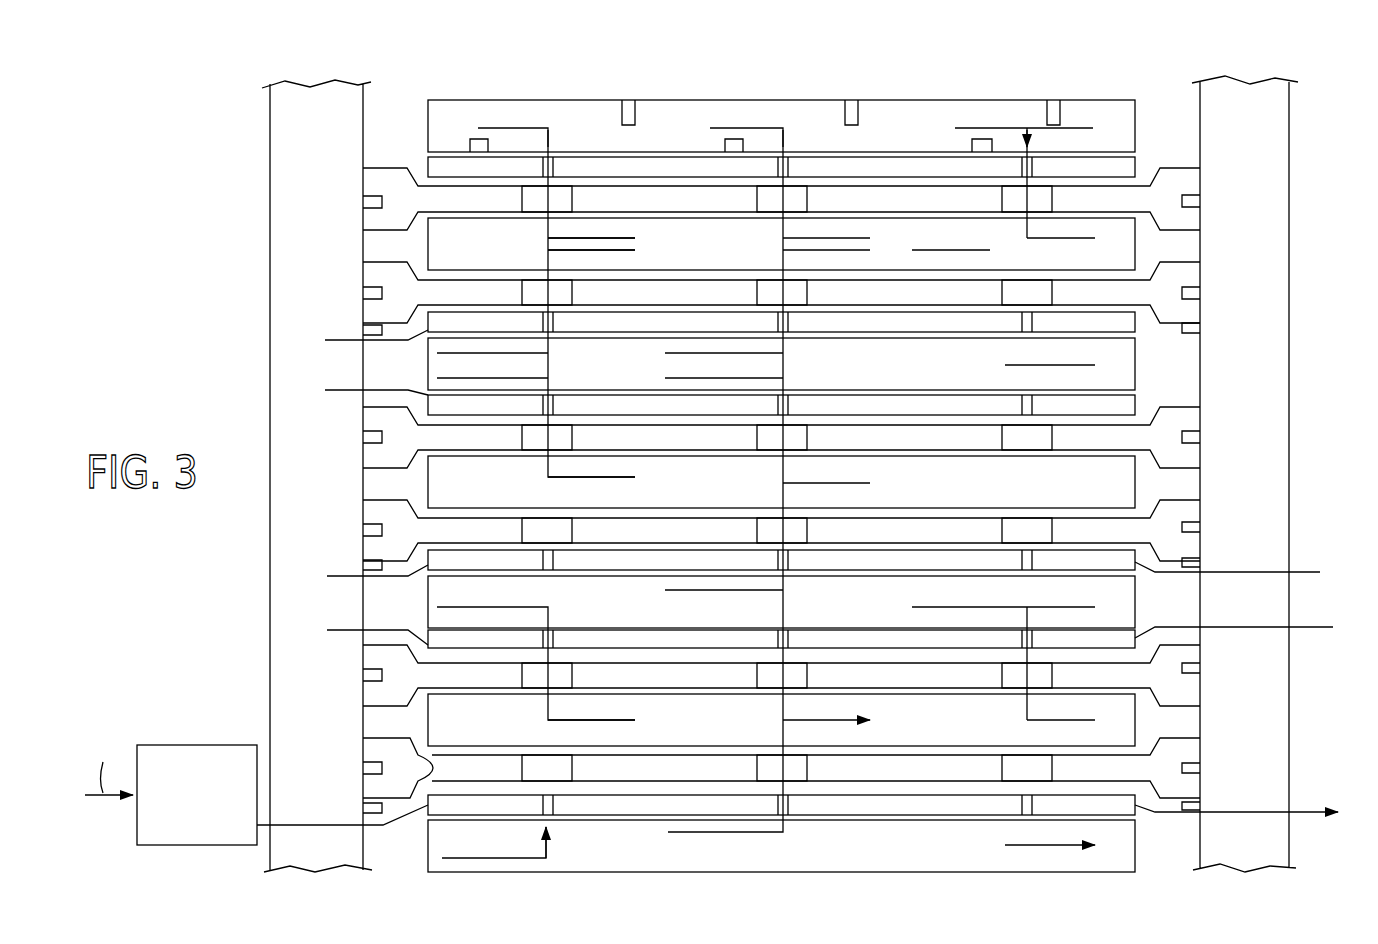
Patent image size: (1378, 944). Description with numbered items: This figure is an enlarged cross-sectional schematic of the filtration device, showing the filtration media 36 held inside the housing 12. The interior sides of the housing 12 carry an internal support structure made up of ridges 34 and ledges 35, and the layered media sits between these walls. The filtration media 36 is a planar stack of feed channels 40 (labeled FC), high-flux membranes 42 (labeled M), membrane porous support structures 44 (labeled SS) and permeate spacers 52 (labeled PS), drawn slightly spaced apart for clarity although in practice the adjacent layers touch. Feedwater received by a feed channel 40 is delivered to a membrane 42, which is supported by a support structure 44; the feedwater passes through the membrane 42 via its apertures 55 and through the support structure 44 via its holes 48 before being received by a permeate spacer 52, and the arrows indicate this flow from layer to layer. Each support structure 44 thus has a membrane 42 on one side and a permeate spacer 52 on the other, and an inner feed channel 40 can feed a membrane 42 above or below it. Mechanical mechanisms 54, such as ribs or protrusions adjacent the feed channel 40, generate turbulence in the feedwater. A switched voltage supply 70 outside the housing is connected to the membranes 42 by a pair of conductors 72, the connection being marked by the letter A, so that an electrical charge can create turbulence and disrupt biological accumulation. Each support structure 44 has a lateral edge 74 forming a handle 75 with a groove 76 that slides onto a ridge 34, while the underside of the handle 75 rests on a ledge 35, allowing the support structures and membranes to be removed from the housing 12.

The housing 12 is at (343, 103).
The ridges 34 is at (1200, 153).
The ledges 35 is at (363, 330).
The filtration media 36 is at (810, 70).
The feed channel 40 is at (536, 110).
The high-flux membrane 42 is at (642, 170).
The membrane porous support structure 44 is at (1185, 175).
The holes 48 is at (572, 205).
The permeate spacer 52 is at (885, 237).
The mechanical mechanism 54 is at (470, 145).
The aperture 55 is at (1028, 157).
The switched voltage supply 70 is at (213, 848).
The conductors 72 is at (262, 825).
The lateral edge 74 is at (373, 753).
The handle 75 is at (365, 782).
The groove 76 is at (370, 770).